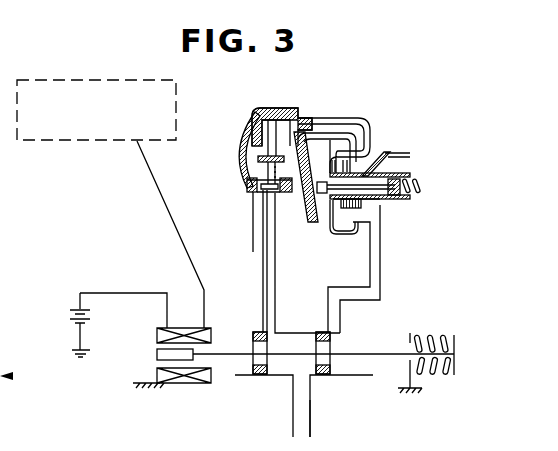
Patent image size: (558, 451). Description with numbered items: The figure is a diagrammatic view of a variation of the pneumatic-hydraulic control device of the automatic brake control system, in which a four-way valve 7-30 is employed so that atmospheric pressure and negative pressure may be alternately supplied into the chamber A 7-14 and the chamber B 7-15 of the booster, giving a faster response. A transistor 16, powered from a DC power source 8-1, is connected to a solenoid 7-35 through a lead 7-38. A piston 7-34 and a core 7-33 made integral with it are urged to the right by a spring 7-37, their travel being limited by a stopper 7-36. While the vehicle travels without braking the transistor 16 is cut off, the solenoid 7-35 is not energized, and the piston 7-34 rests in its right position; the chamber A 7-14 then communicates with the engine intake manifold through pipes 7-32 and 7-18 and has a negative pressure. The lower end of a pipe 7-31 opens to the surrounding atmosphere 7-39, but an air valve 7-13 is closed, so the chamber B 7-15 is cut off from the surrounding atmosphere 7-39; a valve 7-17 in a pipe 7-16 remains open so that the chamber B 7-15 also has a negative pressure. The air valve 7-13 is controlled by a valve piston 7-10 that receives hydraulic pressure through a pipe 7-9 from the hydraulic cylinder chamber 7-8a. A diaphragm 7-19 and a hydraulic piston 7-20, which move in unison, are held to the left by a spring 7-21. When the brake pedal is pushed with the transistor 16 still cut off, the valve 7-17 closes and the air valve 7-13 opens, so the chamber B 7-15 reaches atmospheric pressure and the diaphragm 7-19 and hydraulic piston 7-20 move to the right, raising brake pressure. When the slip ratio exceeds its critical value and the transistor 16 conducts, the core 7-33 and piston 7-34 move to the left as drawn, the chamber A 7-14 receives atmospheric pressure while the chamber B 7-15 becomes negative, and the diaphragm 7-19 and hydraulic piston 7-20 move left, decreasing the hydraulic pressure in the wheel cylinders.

The transistor 16 is at (78, 80).
The DC power source 8-1 is at (68, 312).
The left chamber of the hydraulic cylinder 7-8a is at (383, 153).
The pipe 7-9 is at (336, 118).
The valve piston 7-10 is at (272, 118).
The air valve 7-13 is at (250, 182).
The chamber A 7-14 is at (340, 233).
The chamber B 7-15 is at (323, 218).
The pipe 7-16 is at (366, 128).
The valve 7-17 is at (265, 137).
The pipe 7-18 is at (311, 407).
The diaphragm 7-19 is at (330, 116).
The hydraulic piston 7-20 is at (398, 178).
The spring 7-21 is at (362, 204).
The four-way valve 7-30 is at (285, 367).
The pipe 7-31 is at (263, 261).
The pipe 7-32 is at (380, 251).
The core 7-33 is at (157, 353).
The piston 7-34 is at (190, 387).
The solenoid 7-35 is at (157, 333).
The stopper 7-36 is at (410, 330).
The spring 7-37 is at (428, 336).
The lead 7-38 is at (204, 298).
The surrounding atmosphere 7-39 is at (237, 331).